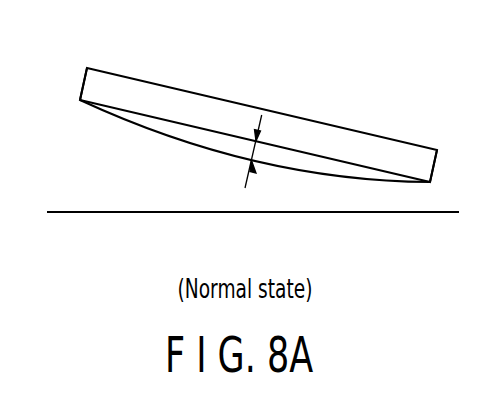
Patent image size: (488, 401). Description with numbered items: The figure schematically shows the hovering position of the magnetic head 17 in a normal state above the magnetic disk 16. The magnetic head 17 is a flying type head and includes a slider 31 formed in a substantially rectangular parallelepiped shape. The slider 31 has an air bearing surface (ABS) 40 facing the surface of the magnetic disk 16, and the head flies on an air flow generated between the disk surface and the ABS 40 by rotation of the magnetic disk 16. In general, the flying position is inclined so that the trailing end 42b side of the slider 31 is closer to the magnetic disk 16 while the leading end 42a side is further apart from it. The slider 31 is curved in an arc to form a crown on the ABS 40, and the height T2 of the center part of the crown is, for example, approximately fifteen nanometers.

The magnetic disk 16 is at (113, 213).
The magnetic head 17 is at (258, 98).
The slider 31 is at (138, 87).
The air bearing surface (ABS) 40 is at (299, 172).
The leading end 42a is at (83, 85).
The trailing end 42b is at (436, 167).
The height of the center part of the crown T2 is at (253, 150).